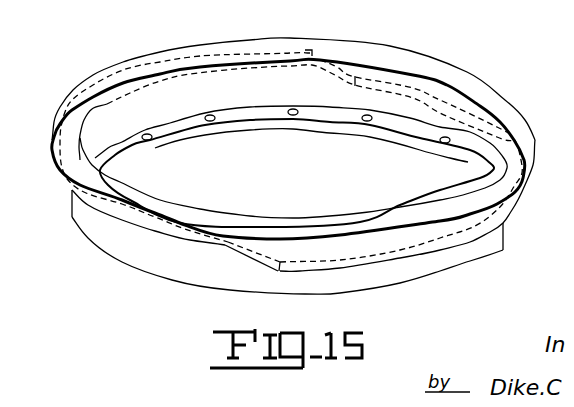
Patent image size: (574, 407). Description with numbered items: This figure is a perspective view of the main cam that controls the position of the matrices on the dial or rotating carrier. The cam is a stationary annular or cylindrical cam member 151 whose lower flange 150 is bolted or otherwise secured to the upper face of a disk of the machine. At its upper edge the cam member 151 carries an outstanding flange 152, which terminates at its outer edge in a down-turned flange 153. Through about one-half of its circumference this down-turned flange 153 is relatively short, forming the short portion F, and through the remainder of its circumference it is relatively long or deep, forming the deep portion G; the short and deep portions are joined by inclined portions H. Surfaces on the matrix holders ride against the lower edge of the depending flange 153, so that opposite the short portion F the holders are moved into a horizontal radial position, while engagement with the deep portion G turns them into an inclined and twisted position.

The lower flange 150 is at (333, 123).
The stationary annular cam member 151 is at (490, 246).
The outstanding flange 152 is at (465, 78).
The down-turned flange 153 is at (281, 274).
The inclined portions H is at (321, 60).
The short portion F is at (72, 213).
The deep portion G is at (395, 258).